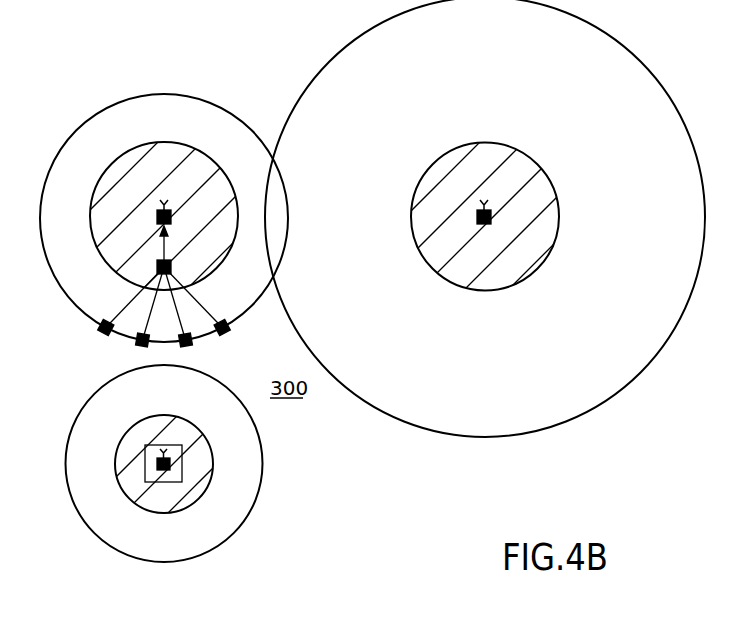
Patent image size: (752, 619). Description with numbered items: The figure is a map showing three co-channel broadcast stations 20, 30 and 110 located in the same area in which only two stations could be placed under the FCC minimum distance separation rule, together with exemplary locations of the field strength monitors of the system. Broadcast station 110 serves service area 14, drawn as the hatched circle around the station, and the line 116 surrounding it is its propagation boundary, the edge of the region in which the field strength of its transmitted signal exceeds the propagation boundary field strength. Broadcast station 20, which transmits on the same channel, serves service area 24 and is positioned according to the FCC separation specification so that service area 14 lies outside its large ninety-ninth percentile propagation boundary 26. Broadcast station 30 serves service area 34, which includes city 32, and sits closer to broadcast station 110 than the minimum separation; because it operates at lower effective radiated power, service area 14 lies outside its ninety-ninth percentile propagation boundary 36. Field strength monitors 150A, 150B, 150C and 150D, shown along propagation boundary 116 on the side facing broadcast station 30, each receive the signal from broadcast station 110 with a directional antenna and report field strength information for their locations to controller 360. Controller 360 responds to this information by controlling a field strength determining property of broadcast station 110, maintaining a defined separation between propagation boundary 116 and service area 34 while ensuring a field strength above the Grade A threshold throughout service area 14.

The propagation boundary 116 is at (110, 106).
The service area 14 is at (113, 163).
The broadcast station 110 is at (171, 211).
The controller 360 is at (172, 267).
The field strength monitor 150A is at (227, 331).
The field strength monitor 150B is at (187, 346).
The field strength monitor 150C is at (141, 346).
The field strength monitor 150D is at (100, 331).
The 99th percentile propagation boundary 26 is at (362, 33).
The service area 24 is at (431, 163).
The broadcast station 20 is at (492, 211).
The 99th percentile propagation boundary 36 is at (65, 473).
The service area 34 is at (138, 418).
The city 32 is at (145, 480).
The broadcast station 30 is at (168, 458).